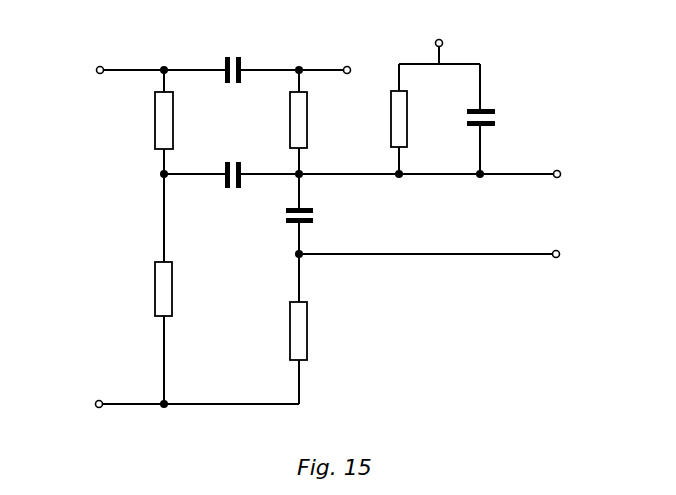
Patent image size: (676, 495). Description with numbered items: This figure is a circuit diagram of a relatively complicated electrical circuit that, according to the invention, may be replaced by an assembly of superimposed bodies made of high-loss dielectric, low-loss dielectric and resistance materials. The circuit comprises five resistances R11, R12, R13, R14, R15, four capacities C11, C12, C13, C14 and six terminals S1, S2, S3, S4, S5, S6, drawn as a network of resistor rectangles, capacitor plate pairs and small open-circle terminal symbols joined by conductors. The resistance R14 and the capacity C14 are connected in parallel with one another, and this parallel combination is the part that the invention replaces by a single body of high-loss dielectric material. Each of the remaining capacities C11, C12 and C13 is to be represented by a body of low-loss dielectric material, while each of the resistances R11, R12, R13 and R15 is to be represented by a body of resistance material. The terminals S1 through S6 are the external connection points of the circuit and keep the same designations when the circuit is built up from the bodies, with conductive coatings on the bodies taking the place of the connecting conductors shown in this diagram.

The resistance R11 is at (150, 120).
The resistance R12 is at (147, 289).
The resistance R13 is at (319, 120).
The resistance R14 is at (383, 119).
The resistance R15 is at (320, 331).
The capacity C11 is at (231, 57).
The capacity C12 is at (237, 192).
The capacity C13 is at (319, 216).
The capacity C14 is at (501, 121).
The terminal S1 is at (445, 30).
The terminal S2 is at (84, 71).
The terminal S3 is at (363, 71).
The terminal S4 is at (579, 173).
The terminal S5 is at (578, 255).
The terminal S6 is at (82, 405).